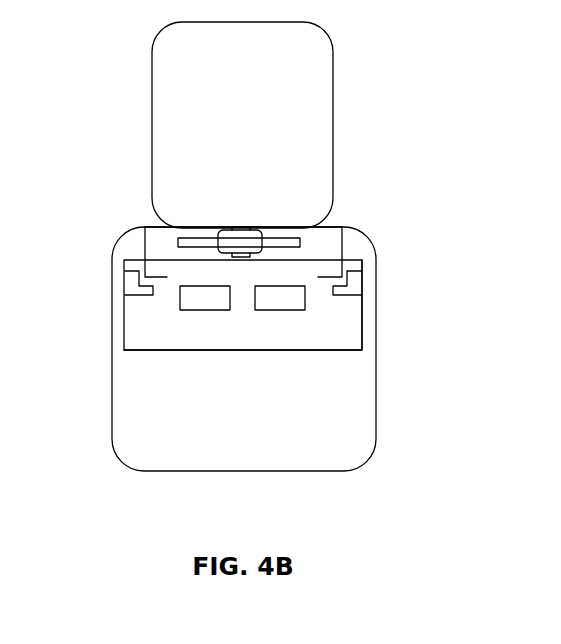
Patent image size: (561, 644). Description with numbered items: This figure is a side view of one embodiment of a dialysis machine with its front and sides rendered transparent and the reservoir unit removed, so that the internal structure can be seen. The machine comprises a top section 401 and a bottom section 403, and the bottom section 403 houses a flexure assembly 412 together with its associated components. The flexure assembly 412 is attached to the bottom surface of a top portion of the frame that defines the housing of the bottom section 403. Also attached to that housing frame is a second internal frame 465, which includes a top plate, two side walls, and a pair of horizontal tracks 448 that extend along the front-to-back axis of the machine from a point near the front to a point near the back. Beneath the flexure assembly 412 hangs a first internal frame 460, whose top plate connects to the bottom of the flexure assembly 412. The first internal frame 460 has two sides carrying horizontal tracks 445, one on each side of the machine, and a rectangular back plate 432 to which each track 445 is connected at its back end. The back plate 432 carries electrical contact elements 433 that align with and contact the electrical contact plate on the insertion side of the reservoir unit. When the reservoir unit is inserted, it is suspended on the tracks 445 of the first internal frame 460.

The top section 401 is at (165, 78).
The bottom section 403 is at (172, 457).
The flexure assembly 412 is at (223, 228).
The back plate 432 is at (352, 327).
The electrical contact elements 433 is at (178, 295).
The horizontal tracks 445 is at (132, 286).
The horizontal tracks 448 is at (157, 277).
The first internal frame 460 is at (362, 262).
The second internal frame 465 is at (343, 242).